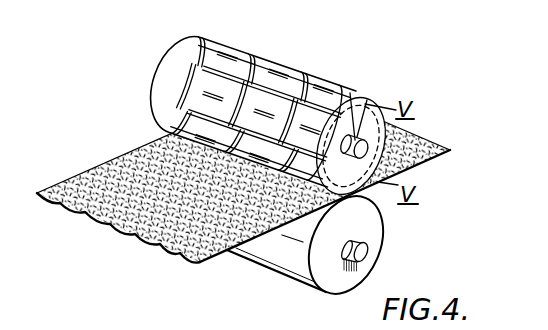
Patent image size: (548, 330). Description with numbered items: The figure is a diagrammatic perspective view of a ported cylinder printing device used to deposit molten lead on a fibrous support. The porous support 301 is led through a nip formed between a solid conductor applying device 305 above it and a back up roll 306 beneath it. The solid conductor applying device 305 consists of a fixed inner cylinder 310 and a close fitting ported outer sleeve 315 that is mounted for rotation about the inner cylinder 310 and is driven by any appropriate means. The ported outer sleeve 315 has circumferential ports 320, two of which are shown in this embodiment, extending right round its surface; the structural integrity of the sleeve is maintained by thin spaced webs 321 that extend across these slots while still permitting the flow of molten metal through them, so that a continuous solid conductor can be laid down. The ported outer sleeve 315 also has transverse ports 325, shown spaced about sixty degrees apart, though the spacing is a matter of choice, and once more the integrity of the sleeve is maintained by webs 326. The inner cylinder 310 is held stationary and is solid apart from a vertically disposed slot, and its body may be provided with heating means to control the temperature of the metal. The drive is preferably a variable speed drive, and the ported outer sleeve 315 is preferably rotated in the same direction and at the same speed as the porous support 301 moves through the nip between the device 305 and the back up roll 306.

The porous support 301 is at (211, 238).
The solid conductor applying device 305 is at (160, 43).
The back up roll 306 is at (370, 225).
The fixed inner cylinder 310 is at (428, 167).
The ported outer sleeve 315 is at (367, 100).
The circumferential ports 320 is at (221, 45).
The thin spaced webs 321 is at (176, 78).
The transverse ports 325 is at (287, 70).
The webs 326 is at (176, 126).